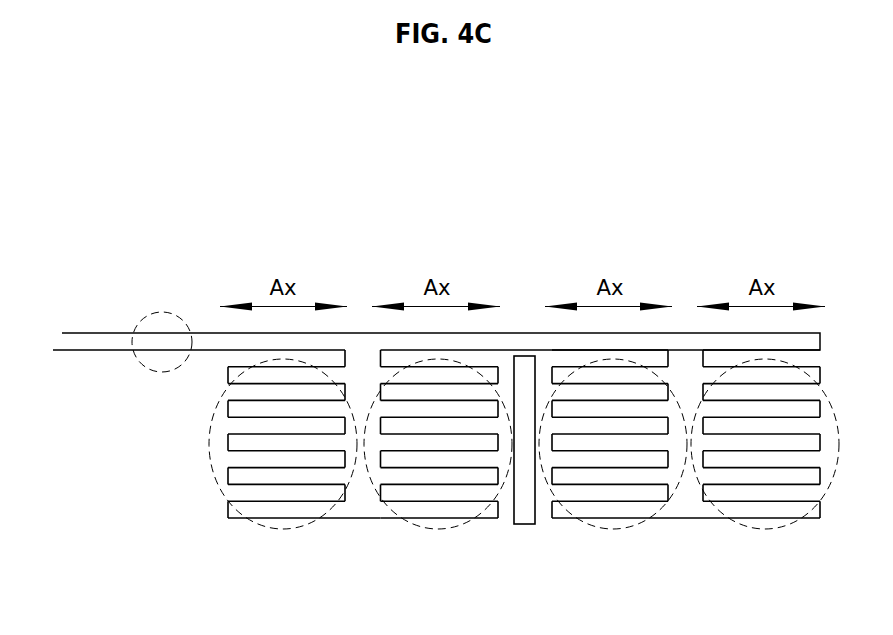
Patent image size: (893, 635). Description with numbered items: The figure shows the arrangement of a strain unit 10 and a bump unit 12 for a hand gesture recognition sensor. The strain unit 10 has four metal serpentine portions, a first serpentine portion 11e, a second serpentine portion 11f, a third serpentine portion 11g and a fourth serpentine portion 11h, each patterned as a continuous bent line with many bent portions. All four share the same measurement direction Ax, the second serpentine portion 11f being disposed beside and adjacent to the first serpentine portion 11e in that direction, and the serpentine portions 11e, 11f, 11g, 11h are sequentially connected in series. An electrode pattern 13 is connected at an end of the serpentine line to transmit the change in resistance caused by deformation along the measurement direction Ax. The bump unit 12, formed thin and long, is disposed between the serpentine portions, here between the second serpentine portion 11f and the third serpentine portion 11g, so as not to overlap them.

The strain unit 10 is at (302, 205).
The first serpentine portion 11e is at (283, 529).
The second serpentine portion 11f is at (438, 529).
The third serpentine portion 11g is at (613, 529).
The fourth serpentine portion 11h is at (765, 529).
The bump unit 12 is at (526, 525).
The electrode pattern 13 is at (175, 313).